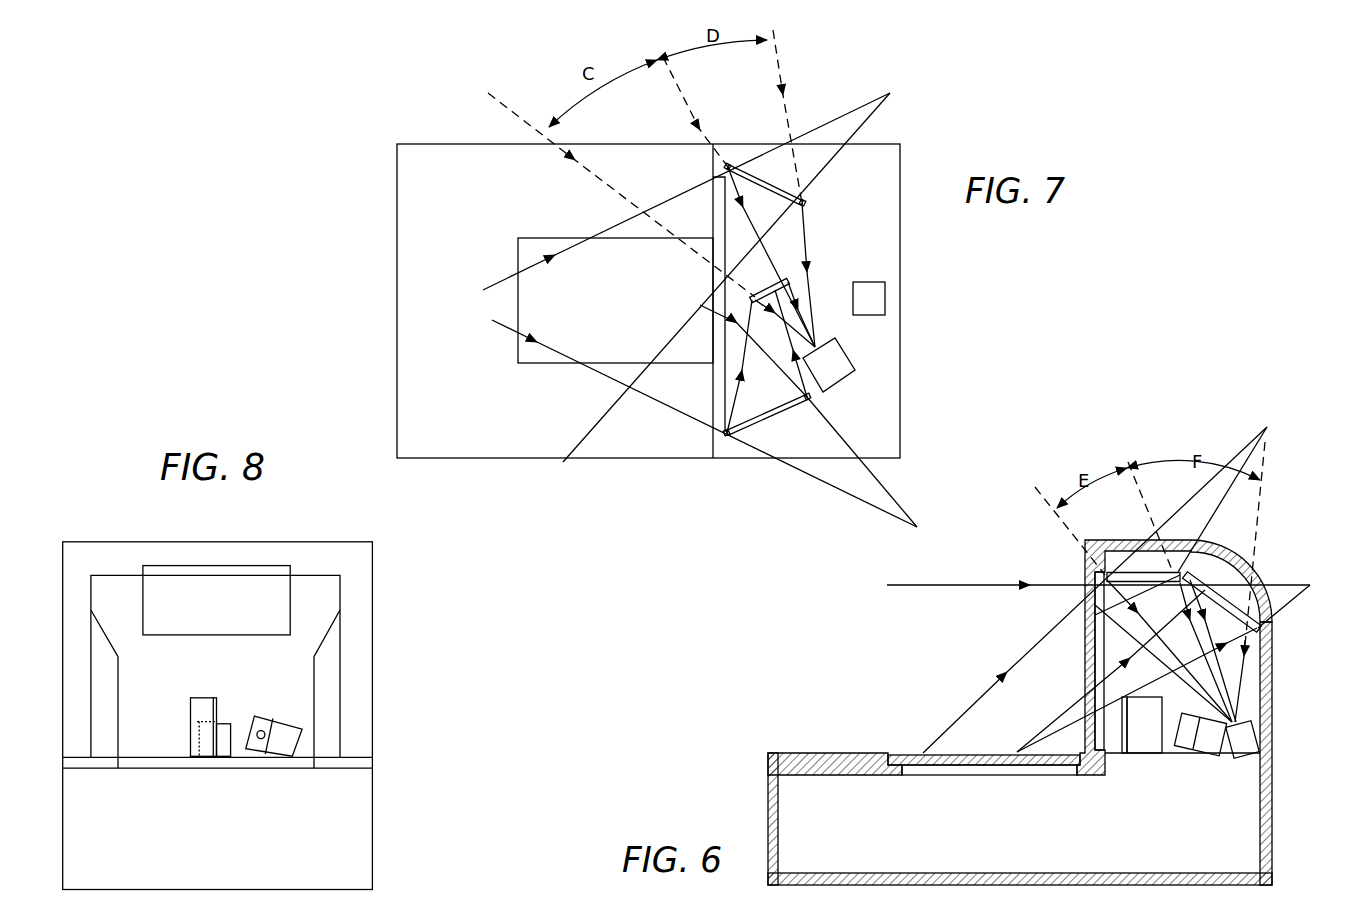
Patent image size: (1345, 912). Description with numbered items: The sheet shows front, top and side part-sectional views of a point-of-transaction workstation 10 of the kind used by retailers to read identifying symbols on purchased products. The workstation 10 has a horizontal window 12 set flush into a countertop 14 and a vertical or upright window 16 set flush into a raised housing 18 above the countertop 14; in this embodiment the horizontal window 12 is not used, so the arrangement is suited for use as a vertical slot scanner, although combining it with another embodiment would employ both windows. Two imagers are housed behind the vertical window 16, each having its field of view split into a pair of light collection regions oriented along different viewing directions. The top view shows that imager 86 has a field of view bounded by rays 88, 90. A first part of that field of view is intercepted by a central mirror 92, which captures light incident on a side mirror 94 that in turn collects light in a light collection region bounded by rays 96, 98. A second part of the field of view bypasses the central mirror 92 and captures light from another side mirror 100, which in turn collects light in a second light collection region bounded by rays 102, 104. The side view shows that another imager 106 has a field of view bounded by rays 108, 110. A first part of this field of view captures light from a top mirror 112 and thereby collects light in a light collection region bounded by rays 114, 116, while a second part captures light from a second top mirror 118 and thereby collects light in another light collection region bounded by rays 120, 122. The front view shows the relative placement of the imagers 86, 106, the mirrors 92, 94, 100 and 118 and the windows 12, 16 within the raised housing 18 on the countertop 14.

In FIG. 7, the point-of-transaction workstation 10 is at (347, 90).
In FIG. 8, the point-of-transaction workstation 10 is at (110, 510).
In FIG. 6, the point-of-transaction workstation 10 is at (805, 597).
In FIG. 7, the horizontal window 12 is at (591, 310).
In FIG. 8, the horizontal window 12 is at (226, 765).
In FIG. 6, the horizontal window 12 is at (946, 765).
In FIG. 7, the countertop 14 is at (484, 418).
In FIG. 8, the countertop 14 is at (354, 822).
In FIG. 6, the countertop 14 is at (780, 752).
In FIG. 7, the vertical window 16 is at (718, 225).
In FIG. 8, the vertical window 16 is at (322, 592).
In FIG. 6, the vertical window 16 is at (1092, 686).
In FIG. 7, the raised housing 18 is at (883, 157).
In FIG. 8, the raised housing 18 is at (362, 566).
In FIG. 6, the raised housing 18 is at (1272, 693).
In FIG. 7, the imager 86 is at (840, 382).
In FIG. 8, the imager 86 is at (273, 749).
In FIG. 6, the imager 86 is at (1207, 757).
In FIG. 7, the ray 88 is at (514, 122).
In FIG. 7, the ray 90 is at (777, 53).
In FIG. 7, the central mirror 92 is at (778, 283).
In FIG. 8, the central mirror 92 is at (194, 716).
In FIG. 6, the central mirror 92 is at (1138, 745).
In FIG. 7, the side mirror 94 is at (768, 421).
In FIG. 8, the side mirror 94 is at (322, 749).
In FIG. 7, the ray 96 is at (607, 374).
In FIG. 7, the ray 98 is at (688, 262).
In FIG. 7, the side mirror 100 is at (755, 172).
In FIG. 8, the side mirror 100 is at (105, 678).
In FIG. 6, the side mirror 100 is at (1110, 748).
In FIG. 7, the ray 102 is at (490, 287).
In FIG. 7, the ray 104 is at (663, 352).
In FIG. 7, the imager 106 is at (887, 297).
In FIG. 8, the imager 106 is at (230, 741).
In FIG. 6, the imager 106 is at (1243, 758).
In FIG. 6, the ray 108 is at (1077, 536).
In FIG. 6, the ray 110 is at (1262, 467).
In FIG. 6, the top mirror 112 is at (1140, 567).
In FIG. 6, the ray 114 is at (940, 740).
In FIG. 6, the ray 116 is at (1135, 640).
In FIG. 8, the top mirror 118 is at (262, 600).
In FIG. 6, the top mirror 118 is at (1223, 597).
In FIG. 6, the ray 120 is at (965, 585).
In FIG. 6, the ray 122 is at (1030, 743).